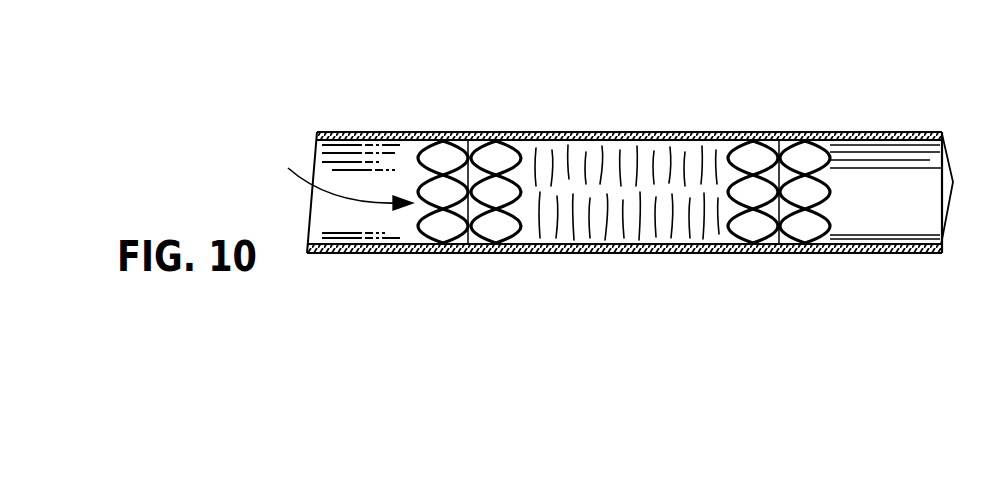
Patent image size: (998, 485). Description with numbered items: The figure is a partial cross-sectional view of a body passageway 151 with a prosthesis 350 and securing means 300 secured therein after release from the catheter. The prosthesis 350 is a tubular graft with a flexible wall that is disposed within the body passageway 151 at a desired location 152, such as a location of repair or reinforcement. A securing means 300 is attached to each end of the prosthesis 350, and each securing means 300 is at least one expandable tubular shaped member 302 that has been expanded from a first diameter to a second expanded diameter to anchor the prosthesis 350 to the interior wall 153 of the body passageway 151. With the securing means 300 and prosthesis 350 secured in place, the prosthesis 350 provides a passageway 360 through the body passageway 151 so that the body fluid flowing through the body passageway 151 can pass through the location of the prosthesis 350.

The body passageway 151 is at (917, 254).
The desired location 152 is at (652, 133).
The interior wall 153 is at (920, 134).
The securing means 300 is at (805, 136).
The expandable tubular shaped member 302 is at (437, 236).
The prosthesis 350 is at (713, 228).
The passageway 360 is at (330, 176).